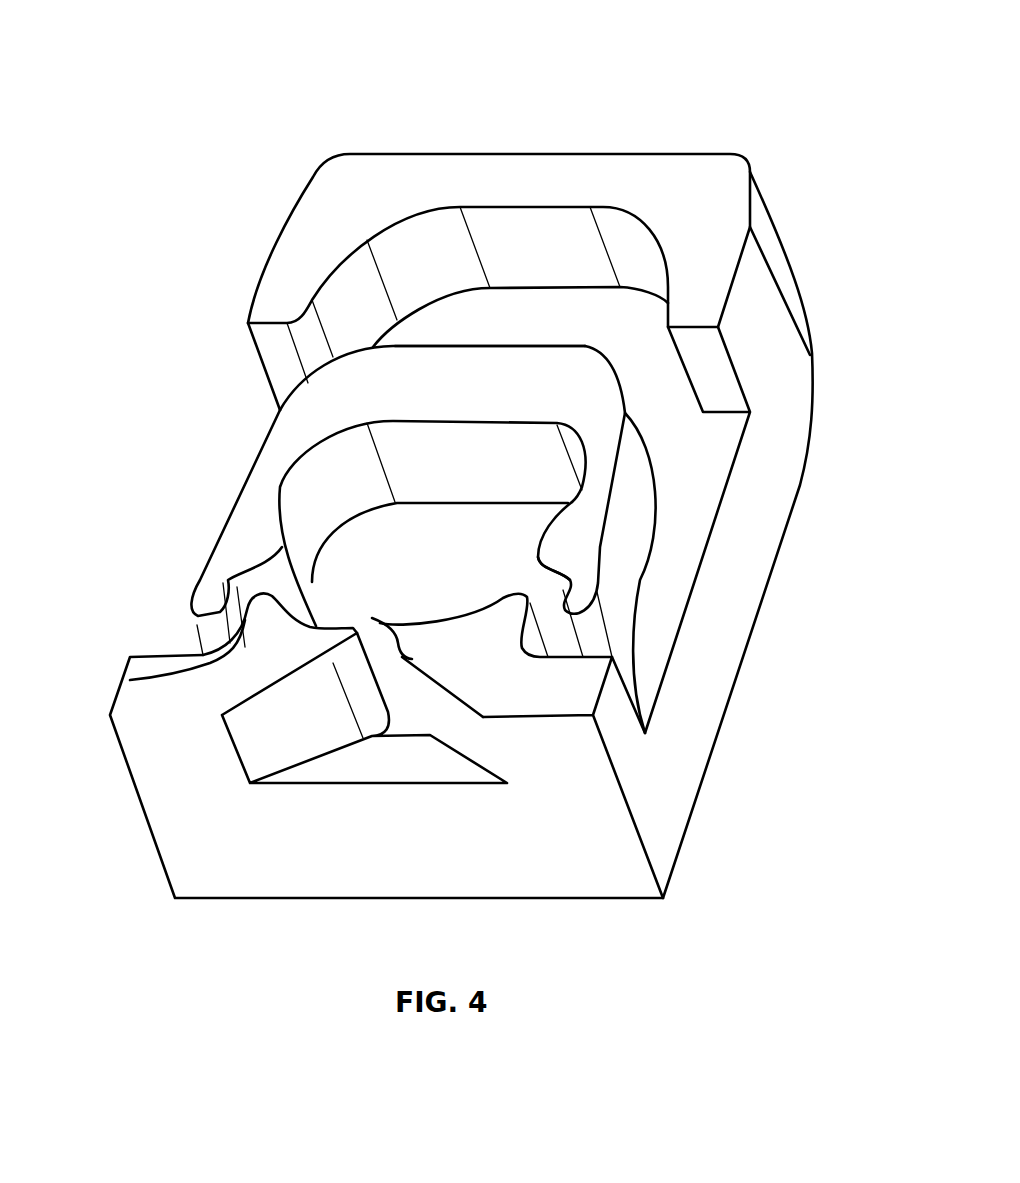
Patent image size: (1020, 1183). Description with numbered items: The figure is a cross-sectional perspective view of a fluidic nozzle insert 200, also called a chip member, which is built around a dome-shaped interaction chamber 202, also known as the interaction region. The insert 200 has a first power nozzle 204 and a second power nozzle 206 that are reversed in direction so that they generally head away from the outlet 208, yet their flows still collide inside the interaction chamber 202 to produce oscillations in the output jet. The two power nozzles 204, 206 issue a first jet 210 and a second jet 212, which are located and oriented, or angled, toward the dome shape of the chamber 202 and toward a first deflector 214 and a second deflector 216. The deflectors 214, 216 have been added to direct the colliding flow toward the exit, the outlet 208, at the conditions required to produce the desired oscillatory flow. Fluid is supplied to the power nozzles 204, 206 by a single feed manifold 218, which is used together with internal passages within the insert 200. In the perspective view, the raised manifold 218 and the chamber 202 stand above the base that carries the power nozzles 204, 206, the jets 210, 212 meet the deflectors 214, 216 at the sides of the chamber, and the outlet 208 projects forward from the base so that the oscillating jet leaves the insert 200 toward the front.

The fluidic nozzle insert 200 is at (231, 52).
The interaction chamber 202 is at (466, 579).
The power nozzle 204 is at (130, 680).
The power nozzle 206 is at (553, 628).
The outlet 208 is at (400, 707).
The jet 210 is at (412, 659).
The jet 212 is at (547, 580).
The deflector 214 is at (243, 550).
The deflector 216 is at (575, 540).
The single feed manifold 218 is at (572, 333).